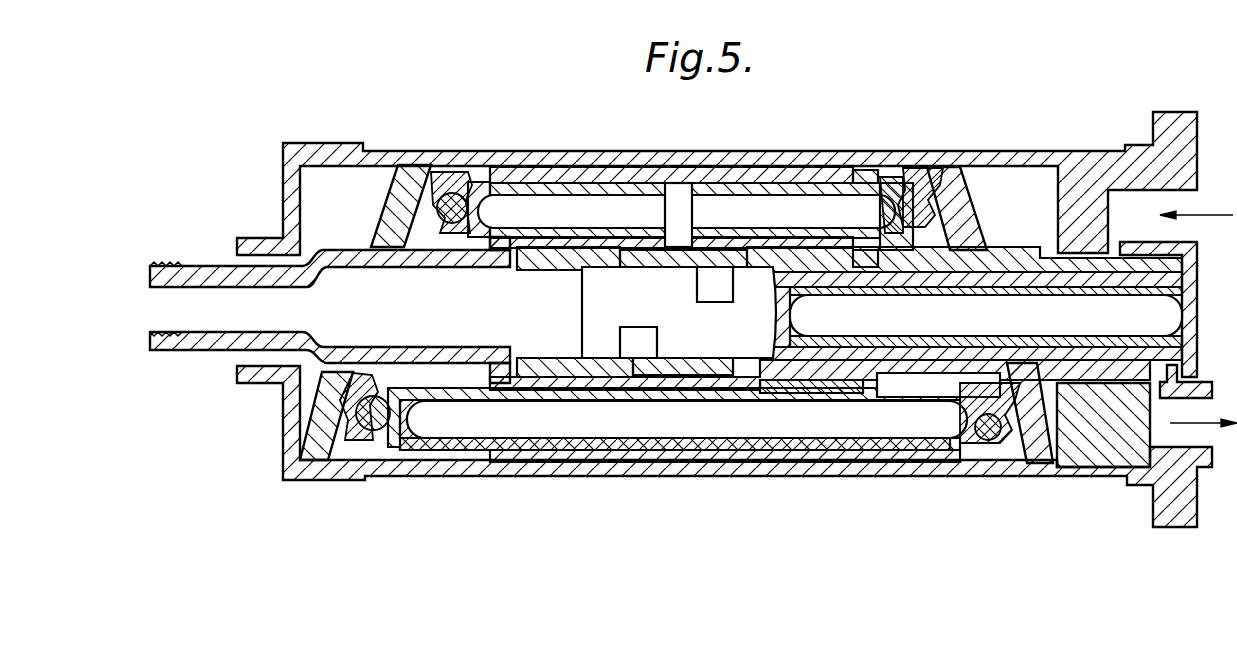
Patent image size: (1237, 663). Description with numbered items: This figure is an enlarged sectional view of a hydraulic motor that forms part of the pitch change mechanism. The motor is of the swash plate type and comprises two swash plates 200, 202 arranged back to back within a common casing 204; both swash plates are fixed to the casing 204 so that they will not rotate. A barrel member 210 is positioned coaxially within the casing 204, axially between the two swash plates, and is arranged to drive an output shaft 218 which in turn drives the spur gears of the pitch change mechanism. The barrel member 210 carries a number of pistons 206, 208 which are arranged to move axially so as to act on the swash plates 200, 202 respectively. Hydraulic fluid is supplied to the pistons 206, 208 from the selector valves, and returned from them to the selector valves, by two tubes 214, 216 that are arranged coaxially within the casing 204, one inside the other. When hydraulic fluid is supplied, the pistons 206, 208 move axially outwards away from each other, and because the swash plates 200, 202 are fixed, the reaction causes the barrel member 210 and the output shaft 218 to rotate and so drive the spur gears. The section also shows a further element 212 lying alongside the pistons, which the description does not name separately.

The swash plate 200 is at (407, 190).
The swash plate 202 is at (957, 200).
The casing 204 is at (638, 468).
The pistons 206 is at (543, 185).
The pistons 208 is at (781, 188).
The barrel member 210 is at (678, 182).
The spool sleeve 212 is at (787, 372).
The tube 214 is at (830, 273).
The tube 216 is at (880, 293).
The output shaft 218 is at (193, 276).